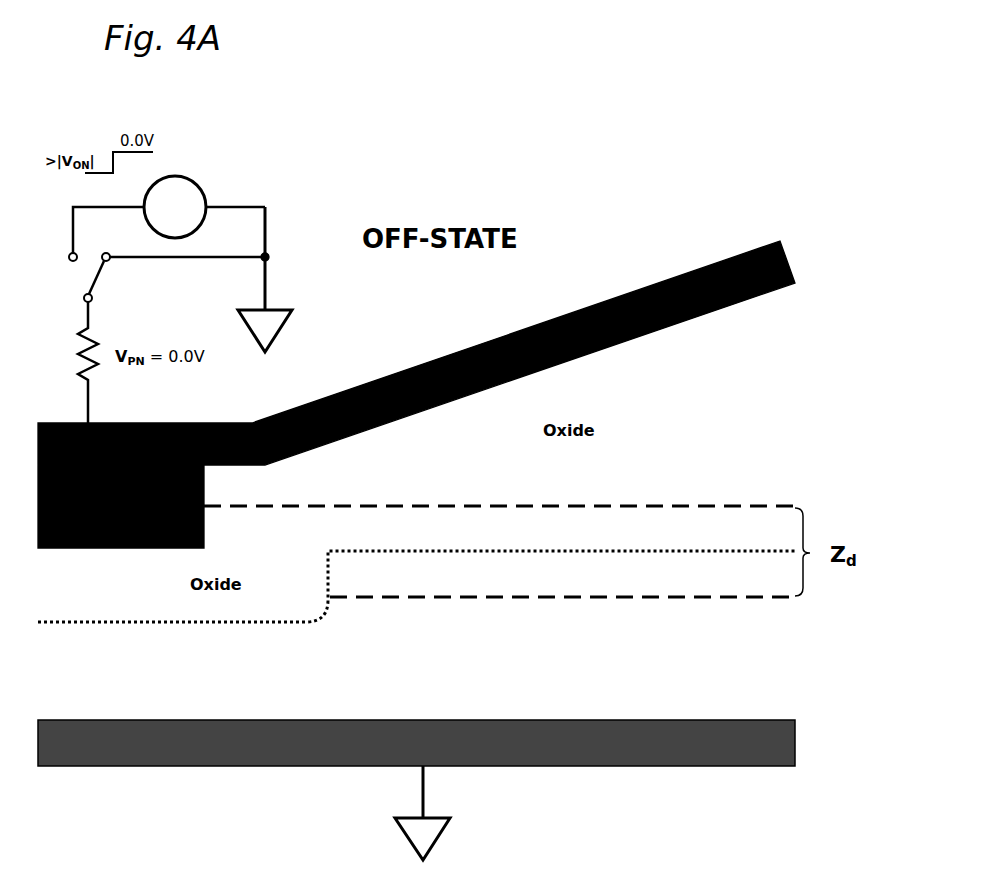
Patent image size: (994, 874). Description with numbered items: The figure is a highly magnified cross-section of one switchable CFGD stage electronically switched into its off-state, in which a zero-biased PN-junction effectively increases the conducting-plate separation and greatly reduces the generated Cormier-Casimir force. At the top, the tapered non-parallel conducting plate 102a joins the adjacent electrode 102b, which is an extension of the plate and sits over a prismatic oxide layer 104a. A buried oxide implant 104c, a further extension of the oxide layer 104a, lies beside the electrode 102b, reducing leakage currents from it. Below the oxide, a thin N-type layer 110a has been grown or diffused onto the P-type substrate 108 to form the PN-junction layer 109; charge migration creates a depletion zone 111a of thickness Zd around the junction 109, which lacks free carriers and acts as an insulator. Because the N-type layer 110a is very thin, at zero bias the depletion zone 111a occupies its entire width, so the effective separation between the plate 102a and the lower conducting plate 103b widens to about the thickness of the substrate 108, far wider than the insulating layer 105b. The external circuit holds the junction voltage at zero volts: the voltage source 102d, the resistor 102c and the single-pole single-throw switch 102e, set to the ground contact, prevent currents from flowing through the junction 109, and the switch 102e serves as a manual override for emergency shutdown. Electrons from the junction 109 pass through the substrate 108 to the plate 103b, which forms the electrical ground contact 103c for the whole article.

The top non-parallel conducting plate 102a is at (593, 302).
The electrode 102b is at (143, 423).
The resistor R 102c is at (95, 342).
The voltage source Vs(t) 102d is at (200, 182).
The single-pole single-throw switch S1 102e is at (98, 272).
The conducting plate 103b is at (325, 768).
The electrical ground contact 103c is at (440, 833).
The prismatic oxide layer 104a is at (705, 436).
The buried oxide implant 104c is at (147, 593).
The insulating layer 105b is at (705, 496).
The P-type semiconductor substrate 108 is at (693, 675).
The PN-junction layer 109 is at (765, 548).
The N-type layer 110a is at (705, 541).
The depletion zone 111a is at (807, 568).